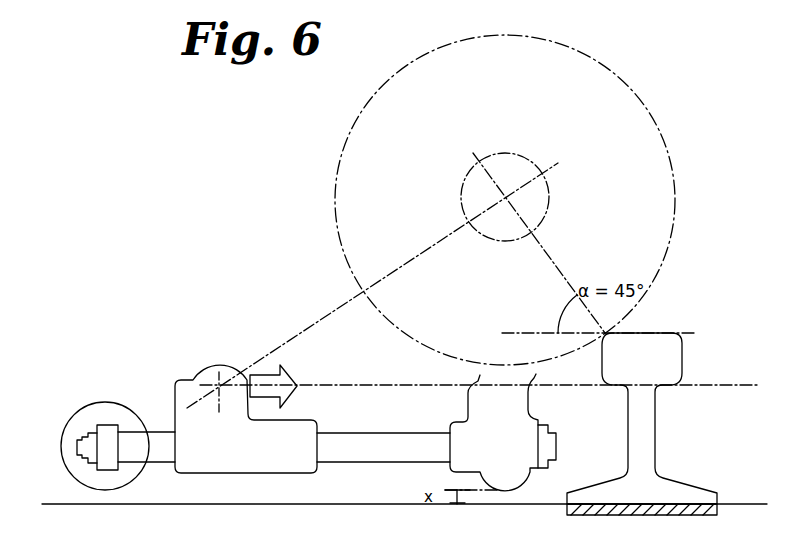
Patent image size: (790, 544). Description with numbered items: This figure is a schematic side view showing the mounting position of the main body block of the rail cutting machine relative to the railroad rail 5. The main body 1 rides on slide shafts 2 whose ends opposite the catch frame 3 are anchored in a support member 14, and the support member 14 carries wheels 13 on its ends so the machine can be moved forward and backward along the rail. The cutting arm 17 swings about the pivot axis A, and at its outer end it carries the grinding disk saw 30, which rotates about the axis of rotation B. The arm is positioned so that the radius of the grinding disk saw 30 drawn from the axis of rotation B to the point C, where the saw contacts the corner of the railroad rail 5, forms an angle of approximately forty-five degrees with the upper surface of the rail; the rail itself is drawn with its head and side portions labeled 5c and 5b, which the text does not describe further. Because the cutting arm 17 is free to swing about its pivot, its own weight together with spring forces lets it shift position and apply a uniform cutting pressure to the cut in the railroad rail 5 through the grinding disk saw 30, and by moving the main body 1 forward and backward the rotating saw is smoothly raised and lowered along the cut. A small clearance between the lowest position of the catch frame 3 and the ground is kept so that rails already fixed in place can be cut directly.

The main body 1 is at (318, 426).
The slide shafts 2 is at (398, 436).
The catch frame 3 is at (529, 396).
The railroad rail 5 is at (651, 440).
The rail head side 5b is at (661, 388).
The rail head 5c is at (674, 358).
The wheels 13 is at (120, 412).
The support member 14 is at (102, 430).
The cutting arm 17 is at (308, 325).
The grinding disk saw 30 is at (665, 142).
The pivot axis A is at (203, 377).
The axis of rotation B is at (507, 198).
The contact point C is at (606, 333).